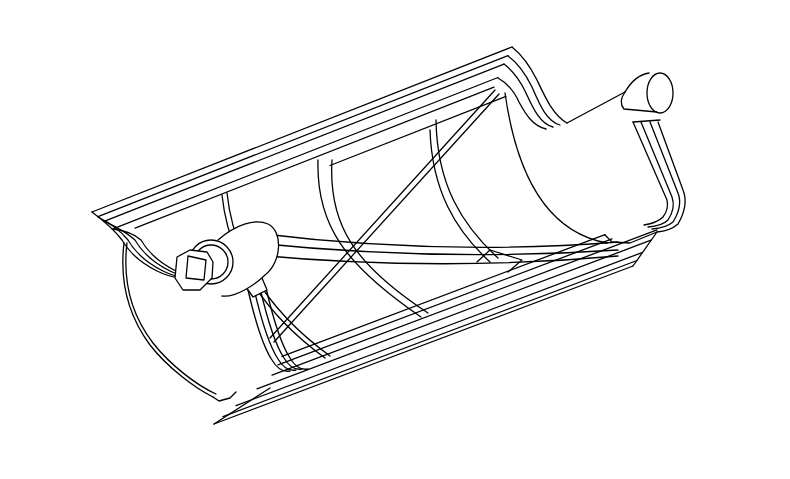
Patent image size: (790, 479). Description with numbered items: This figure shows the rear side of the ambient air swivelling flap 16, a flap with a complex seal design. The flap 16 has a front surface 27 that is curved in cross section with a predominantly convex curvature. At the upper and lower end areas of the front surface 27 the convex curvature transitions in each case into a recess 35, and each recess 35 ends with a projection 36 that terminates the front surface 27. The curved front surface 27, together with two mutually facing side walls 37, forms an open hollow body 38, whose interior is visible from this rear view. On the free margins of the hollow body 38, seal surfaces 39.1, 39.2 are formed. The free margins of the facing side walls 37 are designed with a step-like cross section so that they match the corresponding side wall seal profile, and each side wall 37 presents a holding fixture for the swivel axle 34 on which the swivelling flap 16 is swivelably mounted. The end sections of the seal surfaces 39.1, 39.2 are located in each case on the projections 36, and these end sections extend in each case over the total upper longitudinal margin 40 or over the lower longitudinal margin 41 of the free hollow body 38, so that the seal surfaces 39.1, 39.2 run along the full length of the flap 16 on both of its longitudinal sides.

The ambient air swivelling flap 16 is at (133, 138).
The front surface 27 is at (147, 328).
The swivel axle 34 is at (662, 85).
The recess 35 is at (112, 233).
The projection 36 is at (107, 212).
The side wall 37 is at (600, 155).
The hollow body 38 is at (328, 164).
The seal surface 39.1 is at (525, 76).
The seal surface 39.2 is at (673, 203).
The upper longitudinal margin 40 is at (228, 166).
The lower longitudinal margin 41 is at (422, 340).